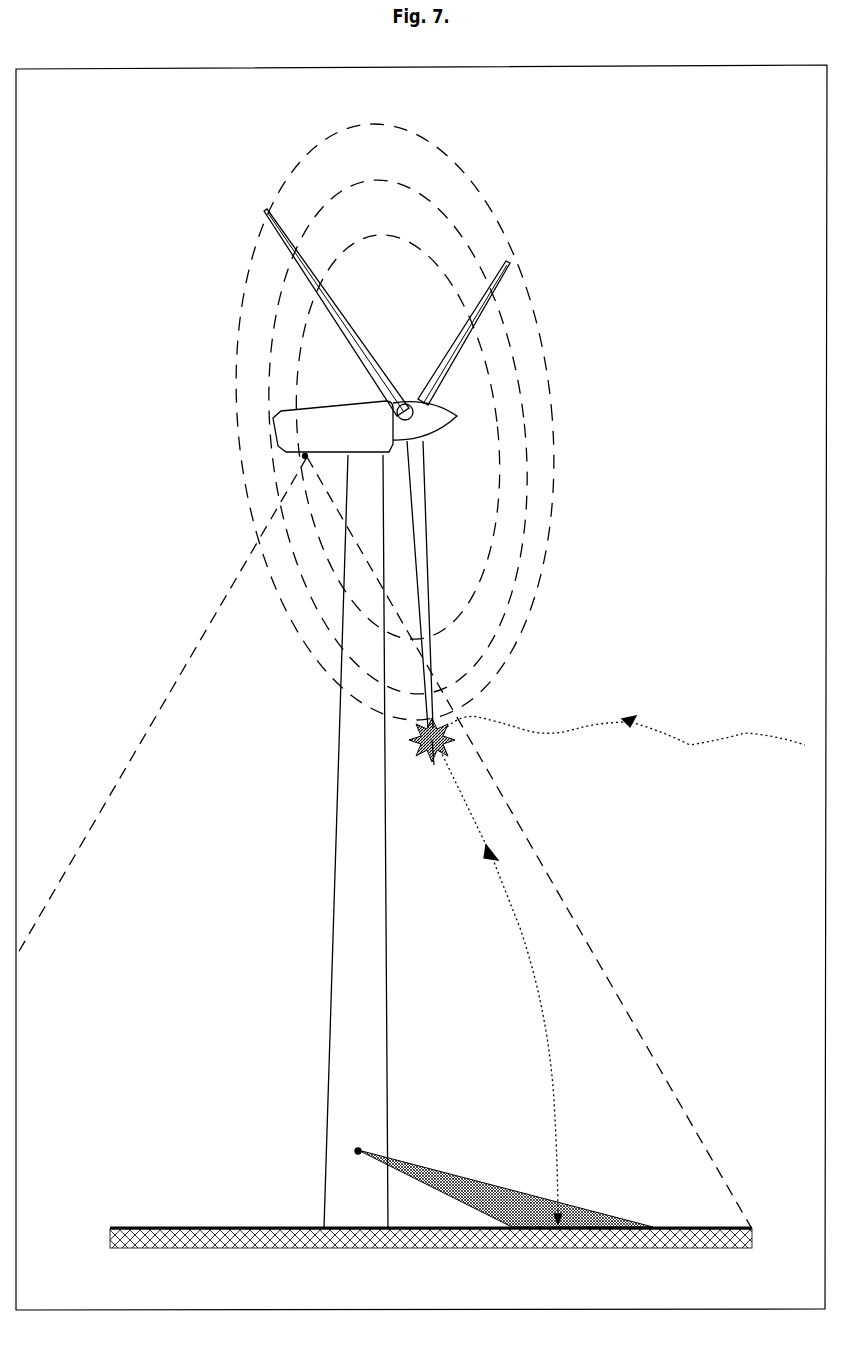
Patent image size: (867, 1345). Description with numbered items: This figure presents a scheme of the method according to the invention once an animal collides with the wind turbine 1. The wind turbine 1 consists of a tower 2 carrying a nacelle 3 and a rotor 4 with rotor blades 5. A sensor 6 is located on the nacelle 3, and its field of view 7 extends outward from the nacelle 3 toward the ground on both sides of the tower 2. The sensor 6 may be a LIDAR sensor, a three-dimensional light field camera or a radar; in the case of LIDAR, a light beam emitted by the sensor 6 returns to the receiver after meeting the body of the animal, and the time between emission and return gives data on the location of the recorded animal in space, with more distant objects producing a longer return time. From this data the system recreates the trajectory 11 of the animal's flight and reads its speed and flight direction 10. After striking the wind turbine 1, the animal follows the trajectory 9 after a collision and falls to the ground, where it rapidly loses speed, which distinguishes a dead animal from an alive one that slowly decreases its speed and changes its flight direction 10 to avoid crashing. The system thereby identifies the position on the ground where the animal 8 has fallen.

The wind turbine 1 is at (567, 405).
The tower 2 is at (340, 1205).
The nacelle 3 is at (295, 412).
The rotor 4 is at (437, 262).
The rotor blades 5 is at (510, 262).
The sensor 6 is at (302, 458).
The field of view of sensor 7 is at (107, 800).
The animal 8 is at (360, 1150).
The trajectory of animal after a collision with a wind turbine 9 is at (635, 720).
The flight direction of animal 10 is at (512, 885).
The trajectory of the animal flight 11 is at (470, 818).